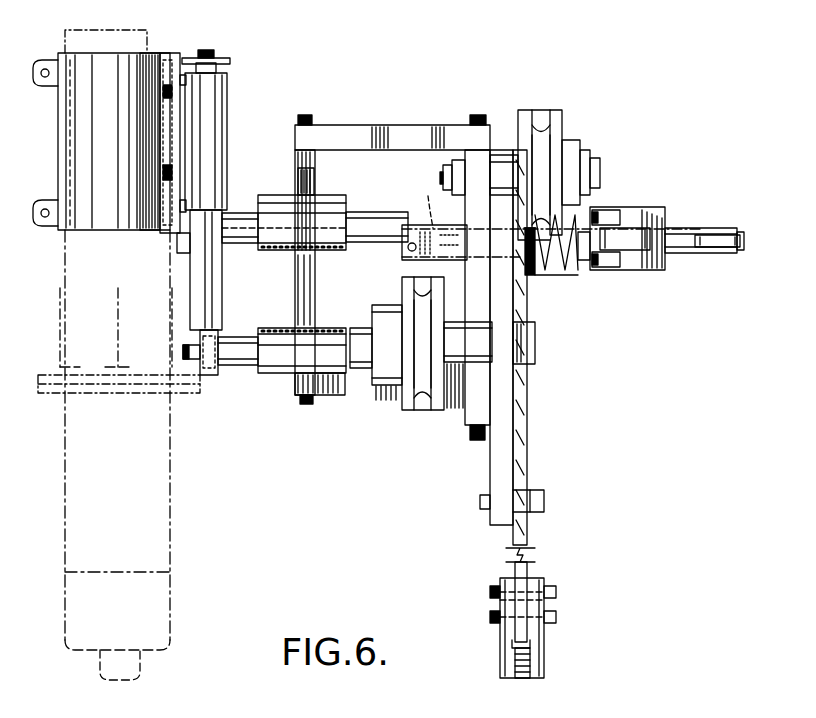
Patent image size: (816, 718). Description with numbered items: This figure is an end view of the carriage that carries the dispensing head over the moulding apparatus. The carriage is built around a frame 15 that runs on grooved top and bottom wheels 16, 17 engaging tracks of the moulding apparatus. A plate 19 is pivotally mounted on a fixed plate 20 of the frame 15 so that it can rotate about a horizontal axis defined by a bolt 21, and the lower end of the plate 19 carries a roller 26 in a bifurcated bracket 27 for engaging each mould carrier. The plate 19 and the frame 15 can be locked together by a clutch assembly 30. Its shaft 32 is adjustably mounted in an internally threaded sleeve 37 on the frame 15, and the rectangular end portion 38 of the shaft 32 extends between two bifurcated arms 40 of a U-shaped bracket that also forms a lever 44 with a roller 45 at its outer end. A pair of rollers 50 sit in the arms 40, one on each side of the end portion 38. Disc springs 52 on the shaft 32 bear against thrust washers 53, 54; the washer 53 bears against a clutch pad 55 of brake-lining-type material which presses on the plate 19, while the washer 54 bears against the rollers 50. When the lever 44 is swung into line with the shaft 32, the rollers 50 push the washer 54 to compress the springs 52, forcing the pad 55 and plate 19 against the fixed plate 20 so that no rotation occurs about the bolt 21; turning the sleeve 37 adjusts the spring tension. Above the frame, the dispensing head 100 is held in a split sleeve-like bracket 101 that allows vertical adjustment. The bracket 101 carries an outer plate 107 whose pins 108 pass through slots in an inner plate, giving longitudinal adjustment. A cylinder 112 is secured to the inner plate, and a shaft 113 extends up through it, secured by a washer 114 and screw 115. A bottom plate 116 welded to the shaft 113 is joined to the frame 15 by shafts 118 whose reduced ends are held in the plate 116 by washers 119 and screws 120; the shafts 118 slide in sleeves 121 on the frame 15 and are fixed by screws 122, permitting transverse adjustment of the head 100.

The frame 15 is at (402, 125).
The grooved top wheel 16 is at (555, 108).
The grooved bottom wheel 17 is at (410, 406).
The plate 19 is at (517, 425).
The fixed plate 20 is at (496, 470).
The bolt 21 is at (540, 500).
The roller 26 is at (535, 679).
The bifurcated bracket 27 is at (546, 645).
The clutch assembly 30 is at (650, 152).
The shaft 32 is at (418, 200).
The internally threaded sleeve 37 is at (402, 254).
The end portion 38 is at (665, 270).
The bifurcated arms 40 is at (630, 207).
The lever 44 is at (686, 258).
The roller 45 is at (736, 230).
The rollers 50 is at (593, 208).
The disc springs 52 is at (546, 272).
The thrust washer 53 is at (528, 270).
The thrust washer 54 is at (580, 262).
The clutch pad 55 is at (530, 260).
The dispensing head 100 is at (160, 537).
The bracket 101 is at (95, 135).
The outer plate 107 is at (175, 131).
The pins 108 is at (160, 52).
The cylinder 112 is at (215, 100).
The shaft 113 is at (197, 263).
The washer 114 is at (224, 60).
The screw 115 is at (206, 50).
The bottom plate 116 is at (214, 378).
The shafts 118 is at (262, 362).
The washers 119 is at (196, 382).
The screws 120 is at (184, 353).
The sleeves 121 is at (340, 200).
The screws 122 is at (313, 183).